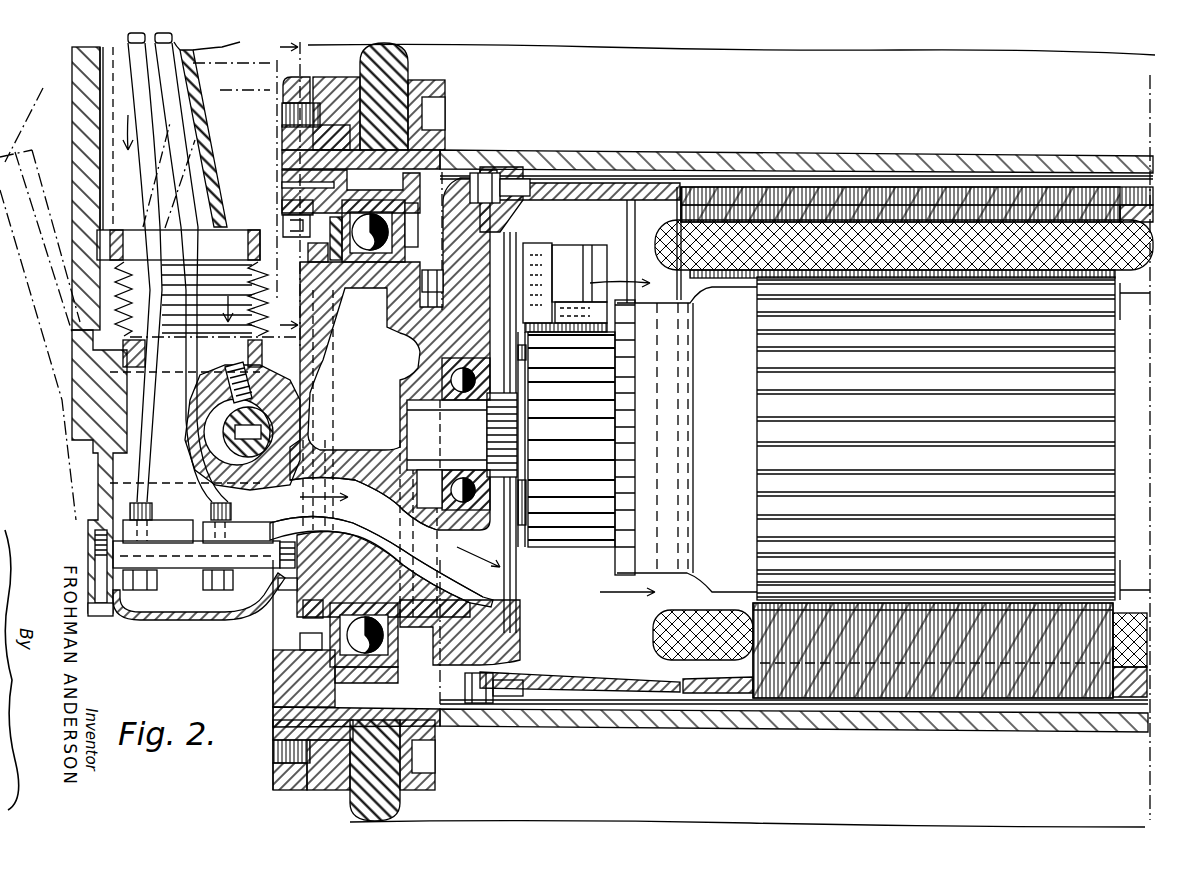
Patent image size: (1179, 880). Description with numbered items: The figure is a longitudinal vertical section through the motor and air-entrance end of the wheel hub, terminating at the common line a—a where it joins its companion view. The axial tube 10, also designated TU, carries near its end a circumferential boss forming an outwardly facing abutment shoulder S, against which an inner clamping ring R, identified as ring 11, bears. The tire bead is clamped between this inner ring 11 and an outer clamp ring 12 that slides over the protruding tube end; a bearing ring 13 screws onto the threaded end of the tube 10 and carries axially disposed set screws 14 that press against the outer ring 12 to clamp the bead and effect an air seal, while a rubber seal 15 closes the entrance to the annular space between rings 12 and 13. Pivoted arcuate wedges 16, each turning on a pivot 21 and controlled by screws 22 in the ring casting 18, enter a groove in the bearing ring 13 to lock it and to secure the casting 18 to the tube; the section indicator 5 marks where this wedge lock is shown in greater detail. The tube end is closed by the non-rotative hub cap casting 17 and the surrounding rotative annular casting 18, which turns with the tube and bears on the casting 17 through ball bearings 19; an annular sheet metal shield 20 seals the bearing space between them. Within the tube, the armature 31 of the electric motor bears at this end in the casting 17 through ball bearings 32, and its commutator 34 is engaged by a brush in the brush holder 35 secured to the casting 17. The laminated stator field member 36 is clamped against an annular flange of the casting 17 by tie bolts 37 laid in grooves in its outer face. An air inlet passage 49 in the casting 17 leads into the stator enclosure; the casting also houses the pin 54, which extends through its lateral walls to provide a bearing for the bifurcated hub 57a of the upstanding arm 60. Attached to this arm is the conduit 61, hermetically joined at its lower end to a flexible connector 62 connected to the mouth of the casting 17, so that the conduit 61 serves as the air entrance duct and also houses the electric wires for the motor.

The tube 10 is at (626, 151).
The axial tube TU is at (748, 170).
The abutment shoulder S is at (445, 148).
The clamping ring R is at (440, 88).
The inner ring 11 is at (445, 92).
The outer clamp ring 12 is at (345, 88).
The bearing ring 13 is at (283, 138).
The set screws 14 is at (285, 114).
The rubber seal 15 is at (300, 78).
The pivoted arcuate wedges 16 is at (290, 172).
The hub cap casting 17 is at (342, 349).
The annular ring casting 18 is at (455, 175).
The ball bearings 19 is at (390, 232).
The annular sheet metal shield 20 is at (285, 218).
The pivot 21 is at (282, 185).
The screws 22 is at (300, 240).
The armature 31 is at (953, 438).
The ball bearings 32 is at (408, 398).
The commutator 34 is at (566, 548).
The brush holder 35 is at (573, 263).
The stator field member 36 is at (905, 195).
The tie bolts 37 is at (838, 178).
The air inlet passage 49 is at (372, 505).
The pin 54 is at (205, 478).
The bifurcated hub 57a is at (232, 380).
The upstanding arm 60 is at (70, 90).
The conduit 61 is at (205, 108).
The flexible connector 62 is at (178, 115).
The section line 5- 5 is at (246, 193).
The common line a— a is at (1147, 441).